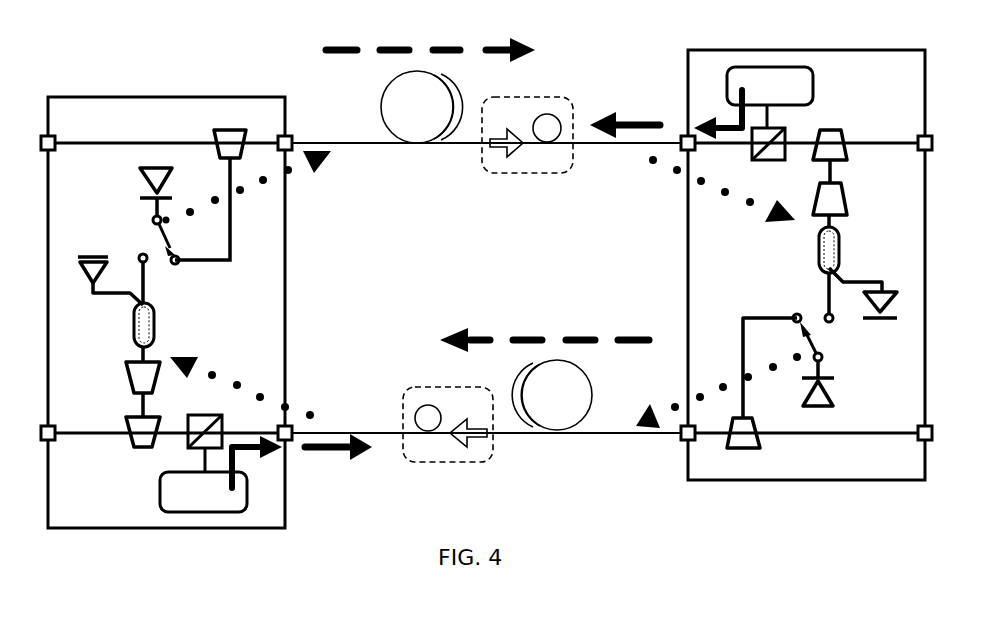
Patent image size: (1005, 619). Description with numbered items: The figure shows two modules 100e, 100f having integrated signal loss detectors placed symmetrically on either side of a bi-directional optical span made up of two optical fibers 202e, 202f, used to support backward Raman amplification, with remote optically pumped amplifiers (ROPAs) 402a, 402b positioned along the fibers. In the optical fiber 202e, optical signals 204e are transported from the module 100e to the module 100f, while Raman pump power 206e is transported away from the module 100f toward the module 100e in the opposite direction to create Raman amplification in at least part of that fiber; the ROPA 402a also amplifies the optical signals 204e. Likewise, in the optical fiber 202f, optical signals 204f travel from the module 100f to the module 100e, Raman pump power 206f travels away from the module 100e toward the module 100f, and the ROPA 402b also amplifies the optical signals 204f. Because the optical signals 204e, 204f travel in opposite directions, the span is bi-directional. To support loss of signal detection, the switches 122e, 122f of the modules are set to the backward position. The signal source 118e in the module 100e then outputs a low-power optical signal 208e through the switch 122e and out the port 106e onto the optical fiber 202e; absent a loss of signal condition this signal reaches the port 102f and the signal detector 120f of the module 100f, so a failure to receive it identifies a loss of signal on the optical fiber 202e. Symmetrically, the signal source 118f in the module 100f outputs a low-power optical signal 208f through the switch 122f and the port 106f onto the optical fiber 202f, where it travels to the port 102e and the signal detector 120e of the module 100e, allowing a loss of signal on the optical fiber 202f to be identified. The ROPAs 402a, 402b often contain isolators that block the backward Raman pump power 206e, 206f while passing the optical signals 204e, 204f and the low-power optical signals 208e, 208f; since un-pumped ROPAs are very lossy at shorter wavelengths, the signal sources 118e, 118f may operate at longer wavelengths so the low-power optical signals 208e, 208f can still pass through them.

The module 100e is at (128, 88).
The module 100f is at (816, 486).
The port 102e is at (294, 446).
The port 102f is at (679, 132).
The port 106e is at (289, 133).
The port 106f is at (681, 446).
The signal source 118e is at (140, 187).
The signal source 118f is at (840, 395).
The signal detector 120e is at (84, 294).
The signal detector 120f is at (890, 284).
The switch 122e is at (164, 272).
The switch 122f is at (813, 309).
The optical fiber 202e is at (364, 150).
The optical fiber 202f is at (625, 440).
The optical signals 204e is at (400, 41).
The optical signals 204f is at (529, 330).
The Raman pump power 206e is at (627, 134).
The Raman pump power 206f is at (328, 438).
The low-power optical signal 208e is at (268, 190).
The low-power optical signal 208f is at (699, 391).
The remote optically pumped amplifier 402a is at (538, 176).
The remote optically pumped amplifier 402b is at (457, 381).